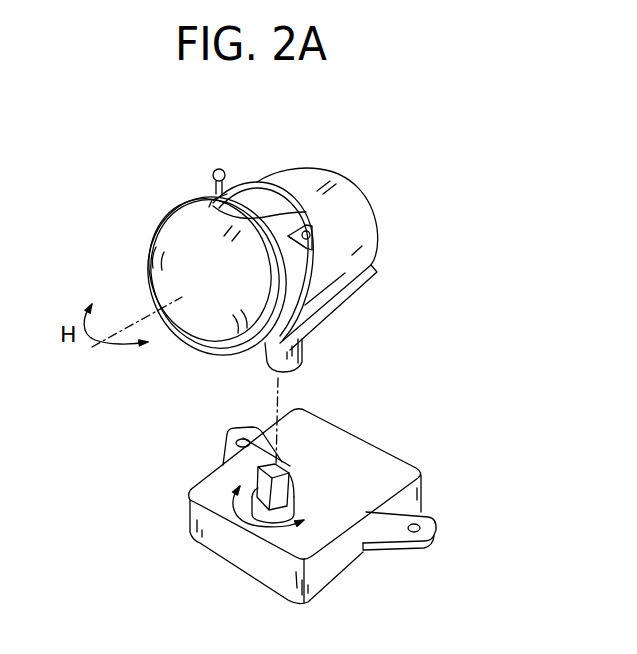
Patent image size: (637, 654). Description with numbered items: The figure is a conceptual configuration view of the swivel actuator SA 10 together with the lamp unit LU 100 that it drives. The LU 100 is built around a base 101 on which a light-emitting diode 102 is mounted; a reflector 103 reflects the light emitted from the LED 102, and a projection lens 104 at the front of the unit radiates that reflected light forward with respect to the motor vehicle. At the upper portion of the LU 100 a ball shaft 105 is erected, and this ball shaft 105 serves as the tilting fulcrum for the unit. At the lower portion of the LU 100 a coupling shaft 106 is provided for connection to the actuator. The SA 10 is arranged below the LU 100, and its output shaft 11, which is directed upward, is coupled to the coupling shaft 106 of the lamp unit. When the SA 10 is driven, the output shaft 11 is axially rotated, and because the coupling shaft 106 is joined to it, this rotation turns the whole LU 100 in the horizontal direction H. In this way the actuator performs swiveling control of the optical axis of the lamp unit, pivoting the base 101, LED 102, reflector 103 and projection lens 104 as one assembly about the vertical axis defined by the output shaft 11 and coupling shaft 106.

The SA 10 is at (385, 447).
The output shaft 11 is at (262, 486).
The LU 100 is at (309, 163).
The base 101 is at (333, 307).
The light-emitting diode 102 is at (313, 228).
The reflector 103 is at (350, 197).
The projection lens 104 is at (210, 327).
The ball shaft 105 is at (219, 168).
The coupling shaft 106 is at (303, 371).